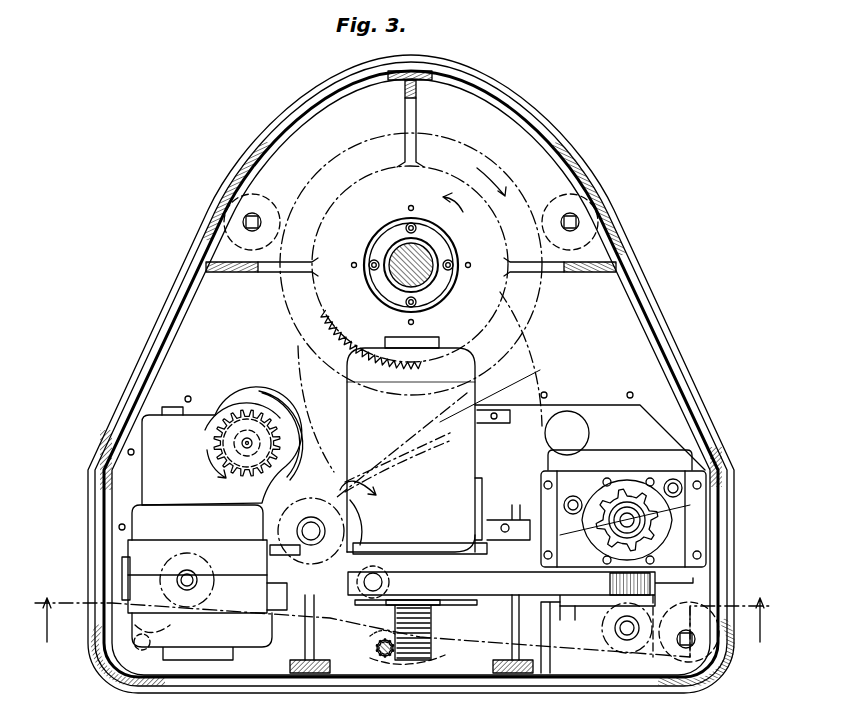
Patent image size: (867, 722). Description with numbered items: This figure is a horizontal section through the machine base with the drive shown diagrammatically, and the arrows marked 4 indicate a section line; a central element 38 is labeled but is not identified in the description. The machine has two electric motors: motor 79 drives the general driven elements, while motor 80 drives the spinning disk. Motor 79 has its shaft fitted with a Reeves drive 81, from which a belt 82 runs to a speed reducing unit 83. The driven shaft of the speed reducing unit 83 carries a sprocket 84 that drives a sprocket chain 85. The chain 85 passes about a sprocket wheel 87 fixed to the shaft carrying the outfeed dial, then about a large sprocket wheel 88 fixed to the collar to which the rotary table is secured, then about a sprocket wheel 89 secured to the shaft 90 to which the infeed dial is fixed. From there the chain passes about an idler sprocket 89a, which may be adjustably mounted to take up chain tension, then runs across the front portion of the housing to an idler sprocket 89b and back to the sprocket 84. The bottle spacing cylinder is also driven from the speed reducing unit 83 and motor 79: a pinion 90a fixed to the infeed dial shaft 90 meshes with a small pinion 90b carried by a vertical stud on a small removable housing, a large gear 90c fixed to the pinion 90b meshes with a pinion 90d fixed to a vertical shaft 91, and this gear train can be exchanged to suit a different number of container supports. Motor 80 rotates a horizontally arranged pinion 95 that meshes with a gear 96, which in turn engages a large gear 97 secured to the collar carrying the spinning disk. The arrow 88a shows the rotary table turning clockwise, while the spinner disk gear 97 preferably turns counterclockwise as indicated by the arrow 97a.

The hub shaft 38 is at (398, 258).
The electric motor 79 is at (514, 372).
The electric motor 80 is at (150, 560).
The Reeves drive 81 is at (430, 602).
The belt 82 is at (551, 578).
The speed reducing unit 83 is at (575, 490).
The sprocket 84 is at (700, 526).
The sprocket chain 85 is at (540, 412).
The sprocket wheel 87 is at (480, 520).
The large sprocket wheel 88 is at (522, 335).
The arrow 88a is at (504, 172).
The sprocket wheel 89 is at (388, 420).
The idler sprocket 89a is at (167, 557).
The idler sprocket 89b is at (606, 630).
The shaft 90 is at (336, 512).
The pinion 90a is at (366, 490).
The small pinion 90b is at (408, 586).
The large gear 90c is at (300, 615).
The pinion 90d is at (376, 645).
The vertical shaft 91 is at (428, 652).
The pinion 95 is at (241, 428).
The gear 96 is at (264, 392).
The large gear 97 is at (466, 262).
The arrow 97a is at (429, 196).
The section line 4- 4 is at (407, 627).